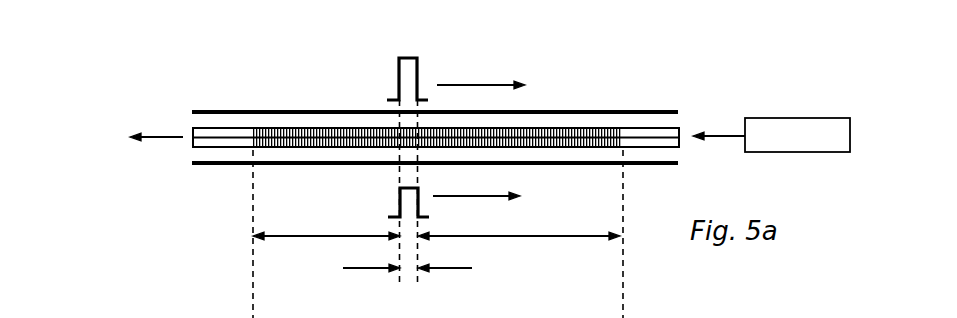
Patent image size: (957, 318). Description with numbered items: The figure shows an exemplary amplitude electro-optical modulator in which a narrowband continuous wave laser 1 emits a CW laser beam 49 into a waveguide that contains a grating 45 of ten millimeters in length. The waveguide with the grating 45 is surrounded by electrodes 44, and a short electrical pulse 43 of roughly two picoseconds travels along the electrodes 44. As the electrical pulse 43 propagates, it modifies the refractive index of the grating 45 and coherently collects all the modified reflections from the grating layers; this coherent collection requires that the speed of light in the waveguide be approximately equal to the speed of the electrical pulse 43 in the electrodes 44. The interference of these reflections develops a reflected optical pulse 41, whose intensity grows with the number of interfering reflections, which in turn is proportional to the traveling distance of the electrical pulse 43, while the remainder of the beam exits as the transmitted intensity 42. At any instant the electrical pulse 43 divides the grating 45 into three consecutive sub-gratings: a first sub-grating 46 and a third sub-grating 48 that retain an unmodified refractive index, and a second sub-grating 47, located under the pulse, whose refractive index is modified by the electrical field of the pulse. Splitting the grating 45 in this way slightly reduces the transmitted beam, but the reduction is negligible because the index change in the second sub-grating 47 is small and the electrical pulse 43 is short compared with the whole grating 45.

The CW laser 1 is at (800, 117).
The reflected optical pulse 41 is at (471, 201).
The transmitted intensity 42 is at (137, 138).
The electrical pulse 43 is at (456, 75).
The electrodes 44 is at (180, 154).
The grating 45 is at (249, 121).
The first sub-grating 46 is at (326, 249).
The second sub-grating 47 is at (407, 285).
The third sub-grating 48 is at (519, 246).
The CW laser beam 49 is at (726, 121).